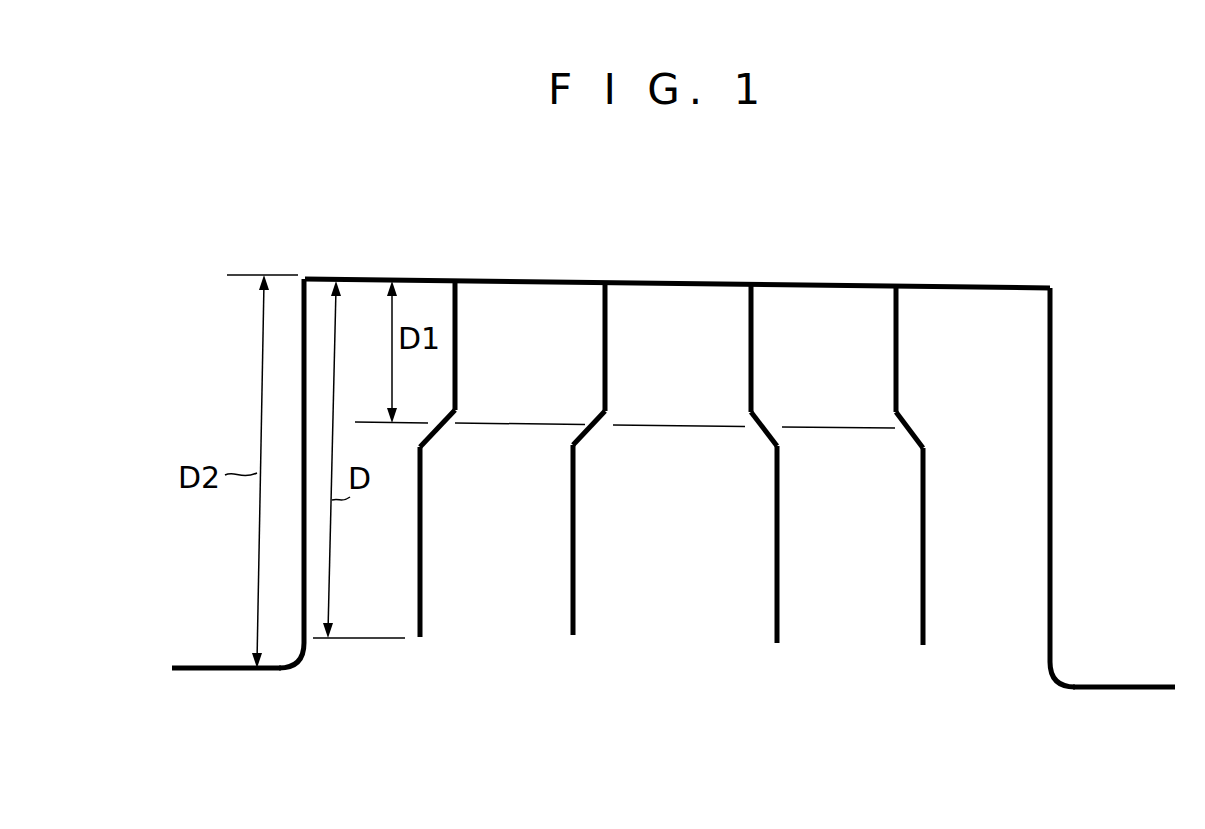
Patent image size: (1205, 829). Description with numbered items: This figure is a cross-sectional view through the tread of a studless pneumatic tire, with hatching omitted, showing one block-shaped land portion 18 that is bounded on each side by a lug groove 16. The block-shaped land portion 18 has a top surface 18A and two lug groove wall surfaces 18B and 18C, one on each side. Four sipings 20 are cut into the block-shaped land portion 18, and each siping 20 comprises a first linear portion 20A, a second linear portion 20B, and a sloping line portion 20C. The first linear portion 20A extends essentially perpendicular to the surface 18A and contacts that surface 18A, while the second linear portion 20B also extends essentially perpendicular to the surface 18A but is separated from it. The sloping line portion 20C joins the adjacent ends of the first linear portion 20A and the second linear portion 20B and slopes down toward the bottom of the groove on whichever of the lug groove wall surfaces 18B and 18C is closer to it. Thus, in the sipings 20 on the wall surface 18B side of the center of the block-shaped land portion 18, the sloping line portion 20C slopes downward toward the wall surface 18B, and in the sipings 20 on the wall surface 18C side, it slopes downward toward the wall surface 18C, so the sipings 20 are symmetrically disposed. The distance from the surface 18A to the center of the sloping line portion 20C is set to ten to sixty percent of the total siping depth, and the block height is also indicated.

The lug groove 16 is at (218, 667).
The block-shaped land portion 18 is at (667, 462).
The surface of the block-shaped land portion 18A is at (876, 283).
The lug groove wall surface 18B is at (1051, 556).
The lug groove wall surface 18C is at (303, 378).
The siping 20 is at (671, 440).
The first linear portion 20A is at (751, 342).
The second linear portion 20B is at (618, 590).
The sloping line portion 20C is at (590, 426).